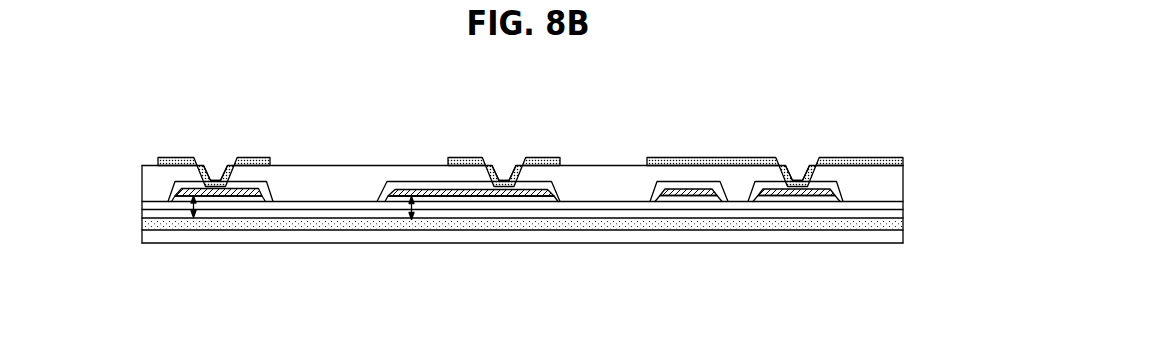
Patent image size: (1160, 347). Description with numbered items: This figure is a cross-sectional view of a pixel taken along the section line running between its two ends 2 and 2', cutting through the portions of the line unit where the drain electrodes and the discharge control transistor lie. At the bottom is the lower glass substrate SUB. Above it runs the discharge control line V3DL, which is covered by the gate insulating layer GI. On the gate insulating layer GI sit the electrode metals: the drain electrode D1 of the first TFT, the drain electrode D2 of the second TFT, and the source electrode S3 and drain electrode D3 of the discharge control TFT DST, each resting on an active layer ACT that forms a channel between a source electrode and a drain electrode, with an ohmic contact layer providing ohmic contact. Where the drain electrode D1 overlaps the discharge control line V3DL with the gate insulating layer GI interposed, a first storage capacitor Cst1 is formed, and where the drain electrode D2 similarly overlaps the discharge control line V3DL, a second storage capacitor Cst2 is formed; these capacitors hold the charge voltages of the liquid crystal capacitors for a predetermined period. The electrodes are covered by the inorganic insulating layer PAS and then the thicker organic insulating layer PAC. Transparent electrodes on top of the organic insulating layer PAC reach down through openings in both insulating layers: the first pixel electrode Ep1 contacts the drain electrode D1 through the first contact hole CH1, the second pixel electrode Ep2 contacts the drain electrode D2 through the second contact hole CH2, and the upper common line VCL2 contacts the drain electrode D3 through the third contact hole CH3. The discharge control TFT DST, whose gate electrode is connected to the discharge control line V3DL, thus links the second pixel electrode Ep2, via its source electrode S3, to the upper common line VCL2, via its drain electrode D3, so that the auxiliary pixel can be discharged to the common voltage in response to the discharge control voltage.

The organic insulating layer PAC is at (142, 177).
The inorganic insulating layer PAS is at (142, 203).
The gate insulating layer GI is at (142, 210).
The lower glass substrate SUB is at (142, 238).
The discharge control line V3DL is at (173, 226).
The drain electrode of the first TFT D1 is at (255, 197).
The drain electrode of the second TFT D2 is at (401, 193).
The source electrode of the discharge control TFT S3 is at (692, 196).
The drain electrode of the discharge control TFT D3 is at (796, 234).
The active layer ACT is at (466, 203).
The first storage capacitor Cst1 is at (213, 207).
The second storage capacitor Cst2 is at (432, 209).
The first contact hole CH1 is at (215, 165).
The second contact hole CH2 is at (504, 165).
The third contact hole CH3 is at (798, 165).
The first pixel electrode Ep1 is at (270, 159).
The second pixel electrode Ep2 is at (561, 158).
The upper common line VCL2 is at (897, 162).
The discharge control TFT DST is at (747, 258).
The section line end 2 is at (143, 259).
The section line end 2' is at (906, 256).